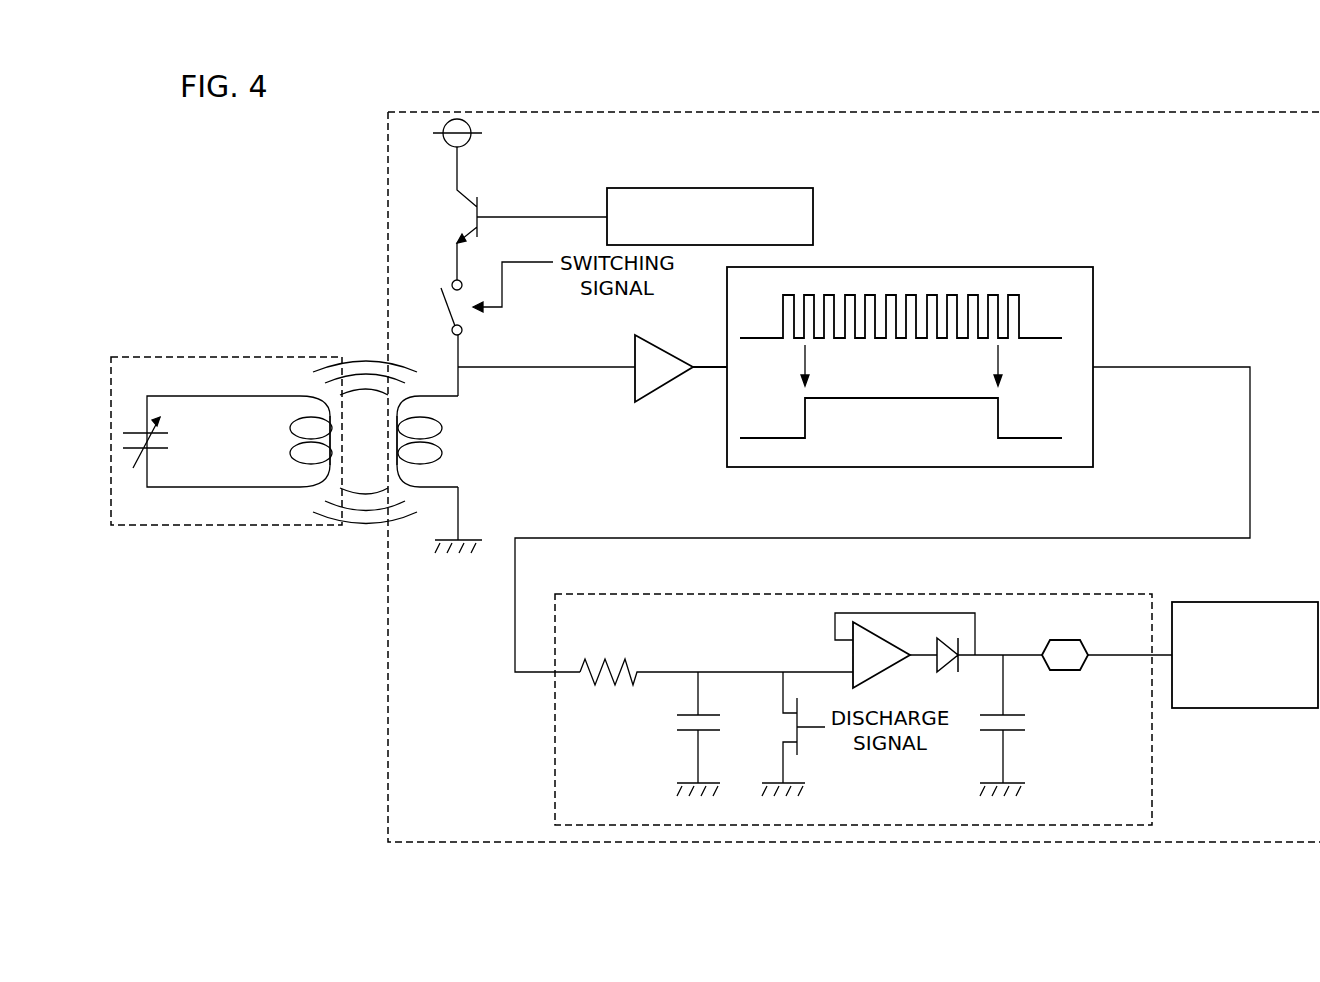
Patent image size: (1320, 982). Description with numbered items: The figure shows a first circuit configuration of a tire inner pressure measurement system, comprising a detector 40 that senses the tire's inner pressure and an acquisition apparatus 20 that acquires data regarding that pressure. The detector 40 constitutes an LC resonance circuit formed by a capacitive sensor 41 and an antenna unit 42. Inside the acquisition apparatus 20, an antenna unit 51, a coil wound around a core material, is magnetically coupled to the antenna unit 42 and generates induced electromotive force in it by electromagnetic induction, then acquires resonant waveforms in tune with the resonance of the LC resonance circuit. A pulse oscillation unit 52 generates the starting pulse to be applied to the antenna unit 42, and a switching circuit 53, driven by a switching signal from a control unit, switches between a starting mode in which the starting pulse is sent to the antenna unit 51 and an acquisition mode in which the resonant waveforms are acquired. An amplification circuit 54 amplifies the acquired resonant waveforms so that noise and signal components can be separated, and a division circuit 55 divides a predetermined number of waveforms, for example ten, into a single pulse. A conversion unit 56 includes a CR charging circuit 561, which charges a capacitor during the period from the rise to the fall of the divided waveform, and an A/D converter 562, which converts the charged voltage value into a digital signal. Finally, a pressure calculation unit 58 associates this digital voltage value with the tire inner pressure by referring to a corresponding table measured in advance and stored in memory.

The acquisition apparatus 20 is at (1068, 112).
The detector 40 is at (227, 357).
The capacitive sensor 41 is at (133, 415).
The antenna unit 42 is at (304, 396).
The antenna unit 51 is at (424, 402).
The pulse oscillation unit 52 is at (669, 188).
The switching circuit 53 is at (442, 278).
The amplification circuit 54 is at (653, 400).
The division circuit 55 is at (905, 267).
The conversion unit 56 is at (1152, 768).
The CR charging circuit 561 is at (670, 748).
The A/D converter 562 is at (1068, 672).
The pressure calculation unit 58 is at (1225, 602).